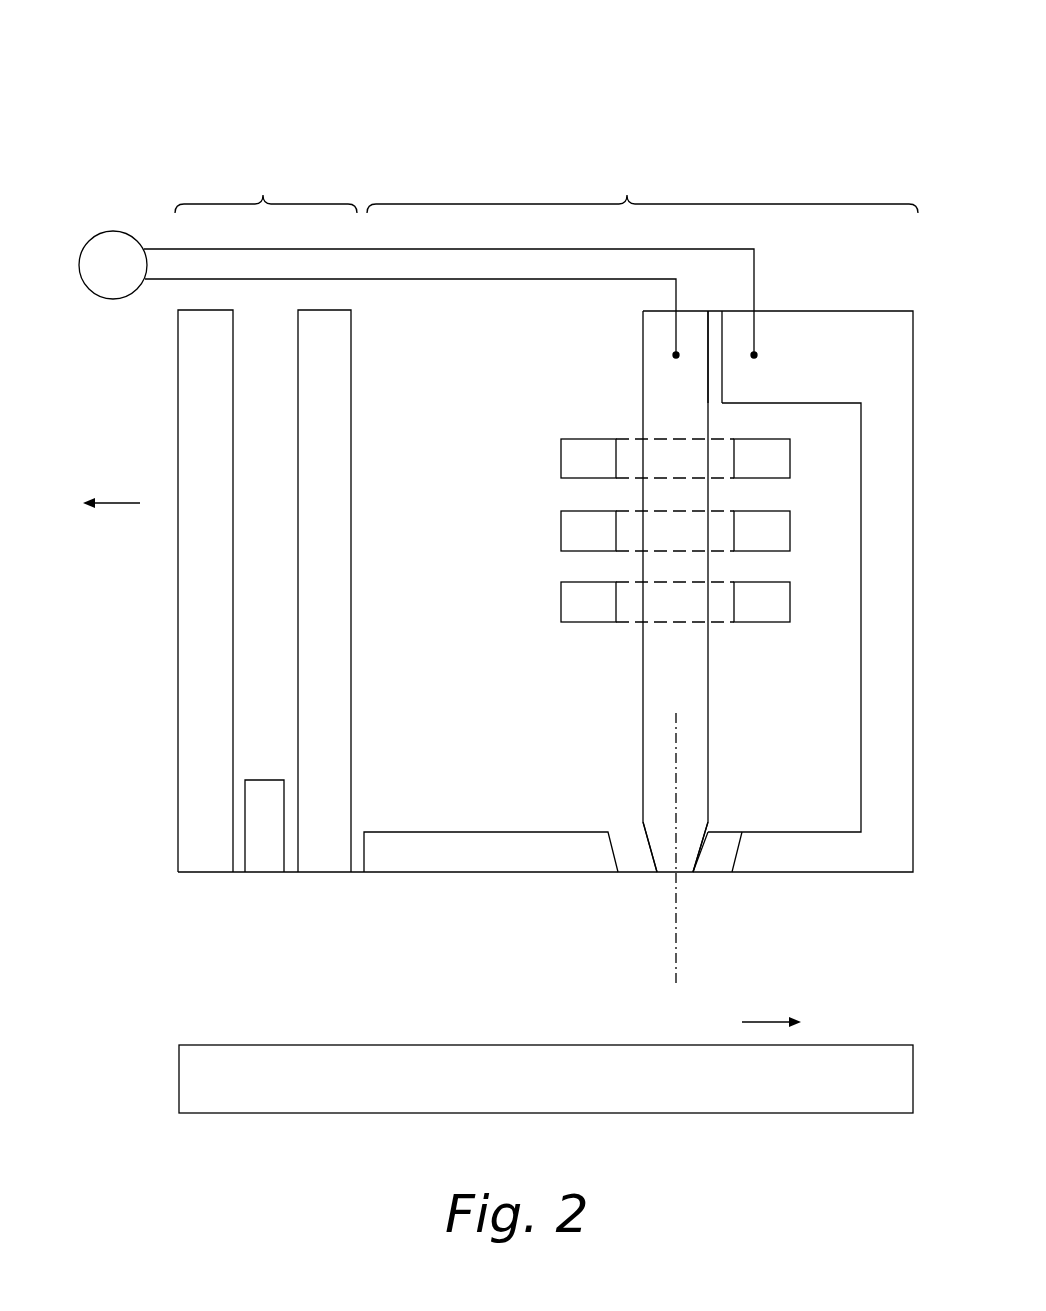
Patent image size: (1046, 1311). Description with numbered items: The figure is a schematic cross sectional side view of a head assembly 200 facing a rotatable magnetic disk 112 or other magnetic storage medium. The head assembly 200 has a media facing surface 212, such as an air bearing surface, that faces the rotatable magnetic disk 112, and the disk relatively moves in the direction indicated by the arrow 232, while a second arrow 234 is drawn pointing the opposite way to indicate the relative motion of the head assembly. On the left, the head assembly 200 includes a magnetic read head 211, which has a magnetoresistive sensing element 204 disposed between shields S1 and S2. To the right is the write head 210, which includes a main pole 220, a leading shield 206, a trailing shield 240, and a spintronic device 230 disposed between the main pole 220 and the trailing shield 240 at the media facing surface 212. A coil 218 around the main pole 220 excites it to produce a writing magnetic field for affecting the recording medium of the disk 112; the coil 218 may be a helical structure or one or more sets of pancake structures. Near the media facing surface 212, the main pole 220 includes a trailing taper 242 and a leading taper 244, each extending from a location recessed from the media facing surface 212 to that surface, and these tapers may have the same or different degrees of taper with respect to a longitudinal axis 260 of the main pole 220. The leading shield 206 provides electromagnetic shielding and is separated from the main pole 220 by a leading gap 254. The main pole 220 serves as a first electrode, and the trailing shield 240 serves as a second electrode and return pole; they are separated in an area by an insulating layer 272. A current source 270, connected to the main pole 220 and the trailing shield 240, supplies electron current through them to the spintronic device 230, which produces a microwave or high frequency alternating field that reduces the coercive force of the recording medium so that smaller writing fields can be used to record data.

The head assembly 200 is at (174, 52).
The current source 270 is at (111, 231).
The magnetic read head 211 is at (266, 191).
The write head 210 is at (642, 191).
The insulating layer 272 is at (712, 318).
The trailing shield 240 is at (883, 857).
The shield S1 is at (202, 873).
The sensing element 204 is at (262, 873).
The shield S2 is at (326, 873).
The leading shield 206 is at (418, 873).
The main pole 220 is at (695, 676).
The media facing surface 212 is at (795, 873).
The spintronic device 230 is at (714, 858).
The coil 218 is at (590, 624).
The leading taper 244 is at (652, 847).
The trailing taper 242 is at (704, 820).
The leading gap 254 is at (635, 866).
The longitudinal axis 260 is at (676, 968).
The arrow 232 is at (760, 1020).
The up-track direction 234 is at (122, 500).
The rotatable magnetic disk 112 is at (179, 1075).